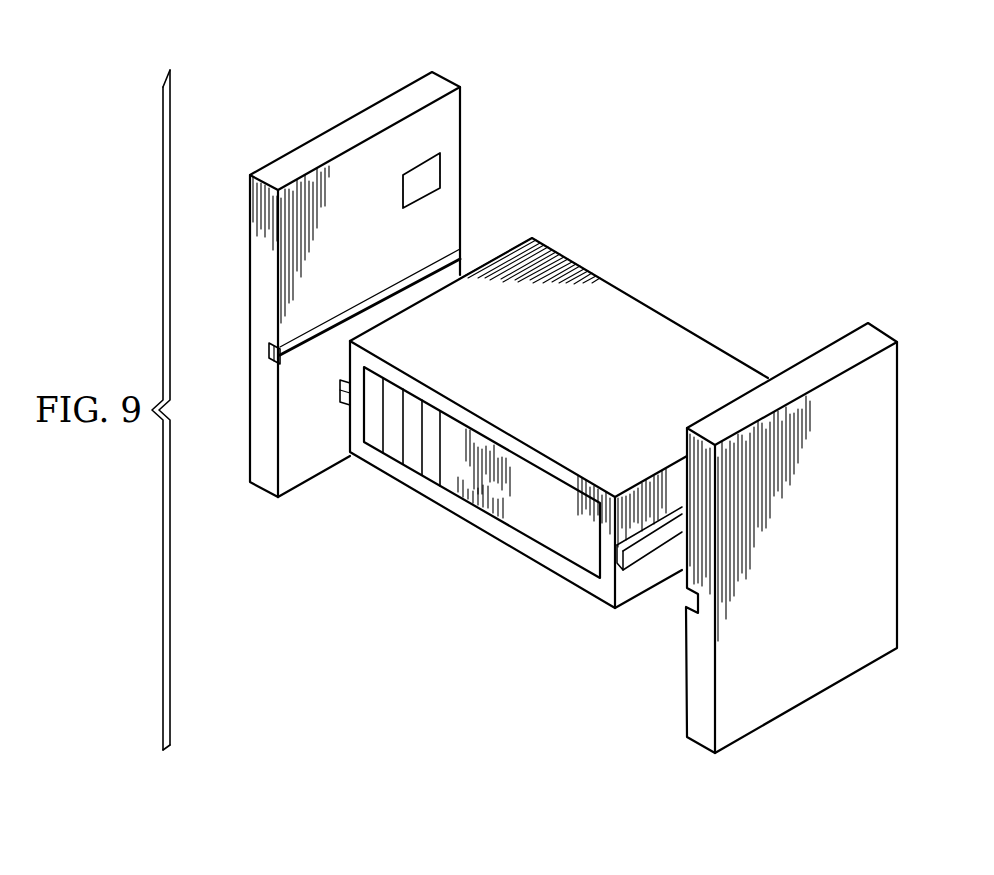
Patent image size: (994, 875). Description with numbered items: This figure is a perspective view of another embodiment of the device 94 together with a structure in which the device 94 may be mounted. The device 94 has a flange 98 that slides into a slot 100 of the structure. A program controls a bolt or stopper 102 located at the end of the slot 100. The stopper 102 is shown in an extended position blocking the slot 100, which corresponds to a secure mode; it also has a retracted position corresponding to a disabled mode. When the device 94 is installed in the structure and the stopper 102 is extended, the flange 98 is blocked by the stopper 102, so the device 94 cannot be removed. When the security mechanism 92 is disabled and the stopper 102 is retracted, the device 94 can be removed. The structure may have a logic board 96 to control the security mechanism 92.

The security mechanism 92 is at (259, 369).
The device 94 is at (590, 384).
The logic board 96 is at (432, 172).
The flange 98 is at (340, 393).
The slot 100 is at (349, 323).
The stopper 102 is at (267, 350).